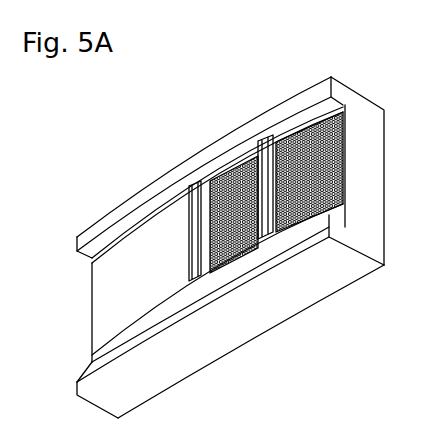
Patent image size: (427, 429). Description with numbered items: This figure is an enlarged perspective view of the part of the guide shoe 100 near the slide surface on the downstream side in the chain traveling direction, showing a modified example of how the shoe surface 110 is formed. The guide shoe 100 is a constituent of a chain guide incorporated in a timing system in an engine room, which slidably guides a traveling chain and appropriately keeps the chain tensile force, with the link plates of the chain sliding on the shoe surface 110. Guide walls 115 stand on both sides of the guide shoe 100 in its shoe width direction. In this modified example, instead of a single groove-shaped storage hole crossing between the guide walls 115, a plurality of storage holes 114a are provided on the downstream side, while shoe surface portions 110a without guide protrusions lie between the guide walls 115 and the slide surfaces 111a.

The guide shoe 100 is at (323, 364).
The shoe surface 110 is at (142, 240).
The honeycomb cells 110a is at (339, 216).
The flange of frame 111a is at (244, 250).
The partition members 114a is at (279, 189).
The guide walls 115 is at (152, 333).